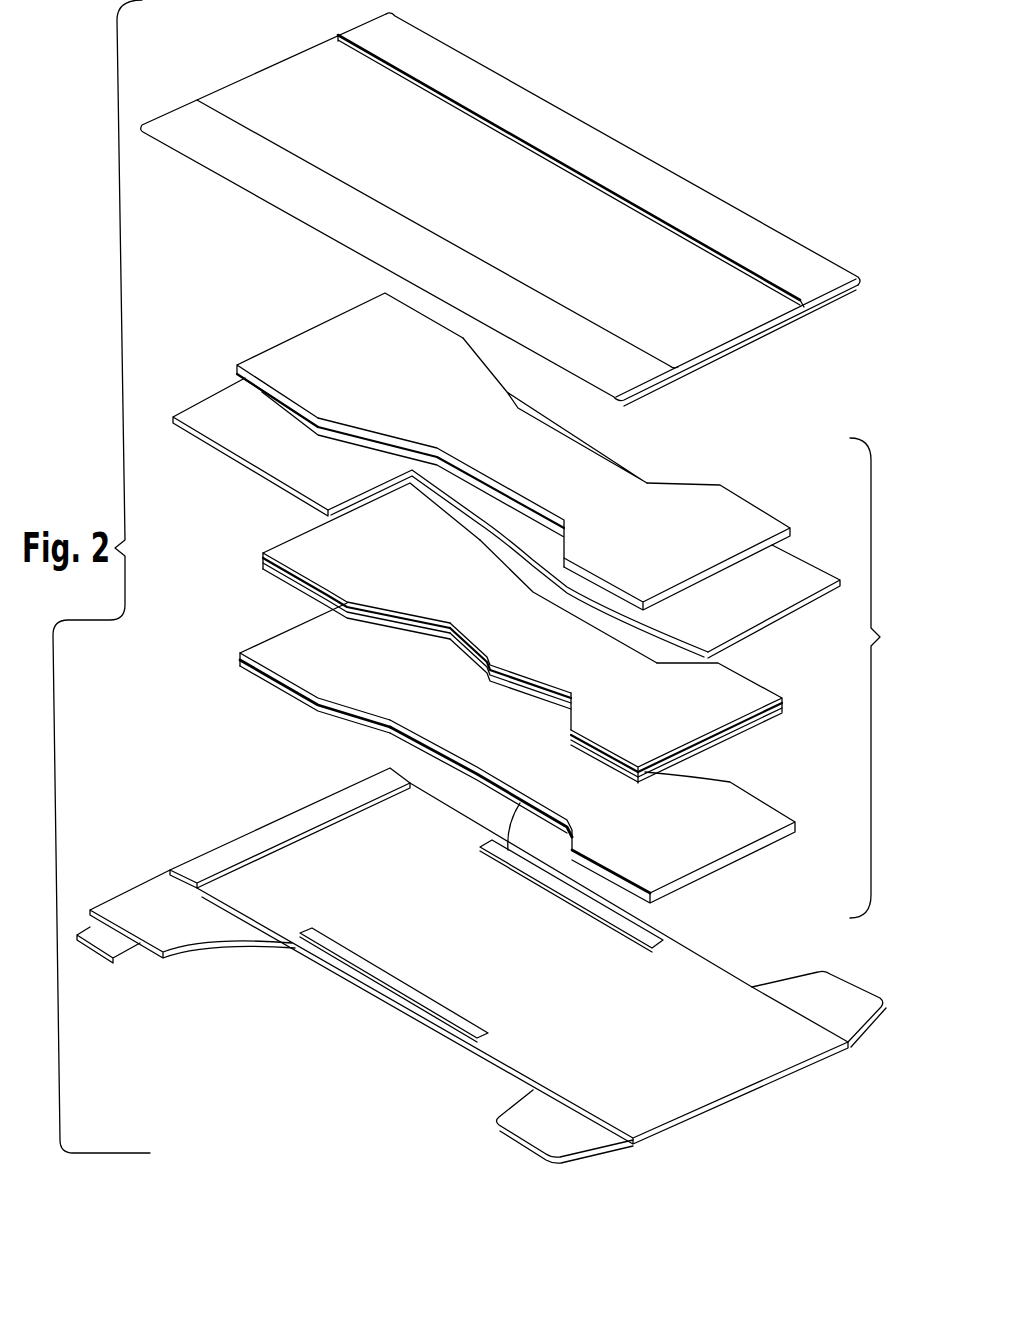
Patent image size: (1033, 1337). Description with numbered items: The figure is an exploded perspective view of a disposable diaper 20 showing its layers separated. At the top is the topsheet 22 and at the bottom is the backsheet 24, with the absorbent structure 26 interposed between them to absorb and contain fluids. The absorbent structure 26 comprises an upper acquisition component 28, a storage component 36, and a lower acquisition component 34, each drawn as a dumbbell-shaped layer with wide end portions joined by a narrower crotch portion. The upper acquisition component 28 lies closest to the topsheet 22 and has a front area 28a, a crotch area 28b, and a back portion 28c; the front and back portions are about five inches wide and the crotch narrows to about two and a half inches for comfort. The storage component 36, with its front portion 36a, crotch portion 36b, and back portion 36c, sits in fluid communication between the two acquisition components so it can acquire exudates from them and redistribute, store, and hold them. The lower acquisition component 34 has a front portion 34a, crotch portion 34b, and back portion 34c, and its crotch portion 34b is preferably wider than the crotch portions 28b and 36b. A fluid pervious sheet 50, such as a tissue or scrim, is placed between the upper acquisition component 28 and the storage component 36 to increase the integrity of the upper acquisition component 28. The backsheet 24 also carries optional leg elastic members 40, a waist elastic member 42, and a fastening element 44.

The disposable diaper 20 is at (645, 108).
The topsheet 22 is at (276, 92).
The backsheet 24 is at (778, 1059).
The absorbent structure 26 is at (516, 605).
The upper acquisition component 28 is at (532, 451).
The front area 28a is at (750, 510).
The crotch area 28b is at (563, 453).
The back portion 28c is at (302, 350).
The lower acquisition component 34 is at (478, 753).
The front portion 34a is at (750, 800).
The crotch portion 34b is at (477, 718).
The back portion 34c is at (302, 662).
The storage component 36 is at (495, 626).
The front portion 36a is at (750, 695).
The crotch portion 36b is at (503, 628).
The back portion 36c is at (305, 545).
The leg elastic members 40 is at (636, 930).
The waist elastic member 42 is at (290, 822).
The fastening element 44 is at (139, 982).
The fluid pervious sheet 50 is at (214, 426).